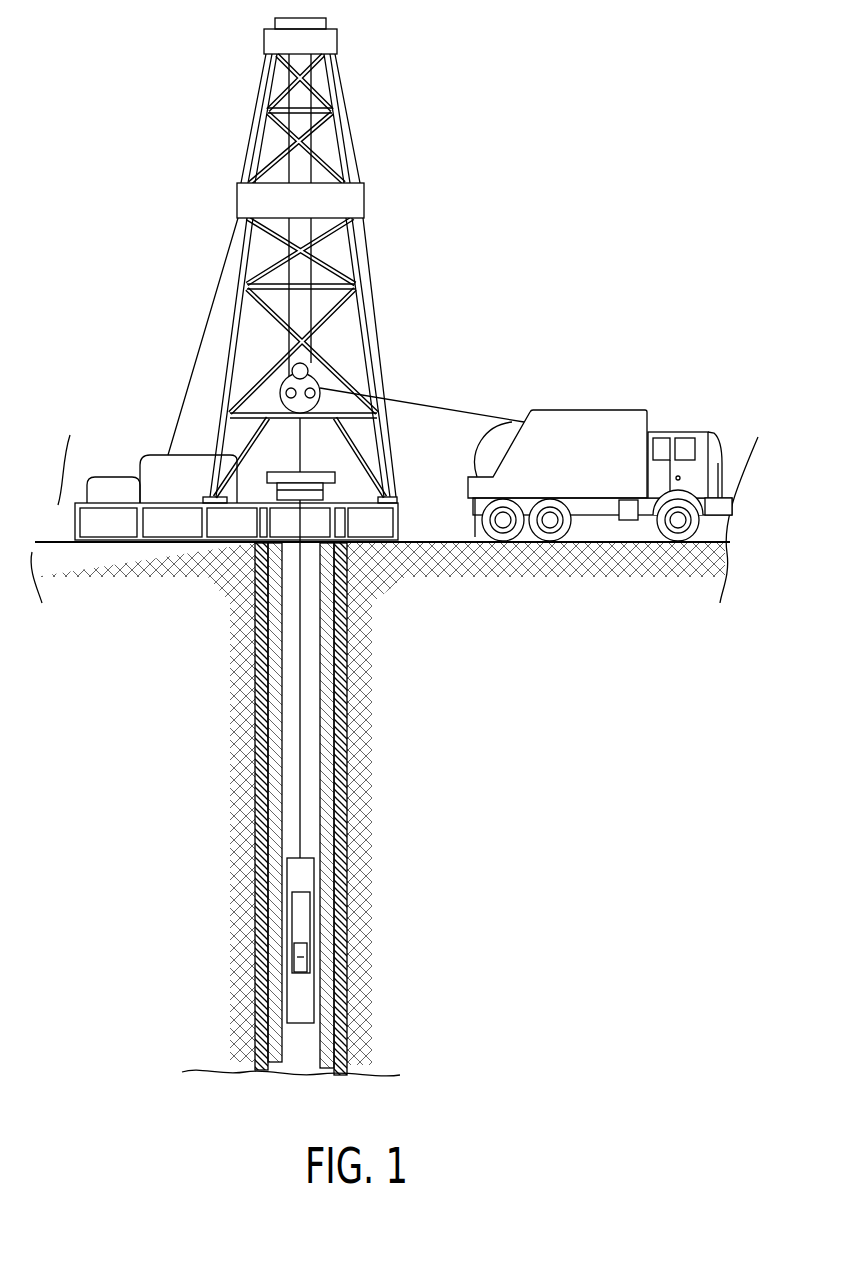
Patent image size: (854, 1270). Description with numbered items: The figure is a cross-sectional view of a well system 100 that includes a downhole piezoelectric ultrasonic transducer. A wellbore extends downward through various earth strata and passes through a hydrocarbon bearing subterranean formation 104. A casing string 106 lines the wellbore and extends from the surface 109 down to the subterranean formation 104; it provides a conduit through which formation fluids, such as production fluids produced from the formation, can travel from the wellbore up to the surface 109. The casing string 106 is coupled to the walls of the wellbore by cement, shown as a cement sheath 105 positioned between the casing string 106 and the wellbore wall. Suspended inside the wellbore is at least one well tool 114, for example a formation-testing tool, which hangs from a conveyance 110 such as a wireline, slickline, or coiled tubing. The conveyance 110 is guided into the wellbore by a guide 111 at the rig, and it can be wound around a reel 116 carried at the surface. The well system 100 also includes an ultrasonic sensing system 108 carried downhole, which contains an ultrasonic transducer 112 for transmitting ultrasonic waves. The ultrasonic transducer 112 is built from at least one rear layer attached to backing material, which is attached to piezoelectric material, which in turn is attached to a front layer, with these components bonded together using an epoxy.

The well system 100 is at (530, 171).
The hydrocarbon bearing subterranean formation 104 is at (390, 659).
The cement sheath 105 is at (338, 937).
The casing string 106 is at (270, 743).
The ultrasonic sensing system 108 is at (302, 912).
The surface 109 is at (330, 472).
The conveyance 110 is at (440, 408).
The guide 111 is at (312, 363).
The ultrasonic transducer 112 is at (295, 955).
The well tool 114 is at (314, 890).
The reel 116 is at (512, 430).